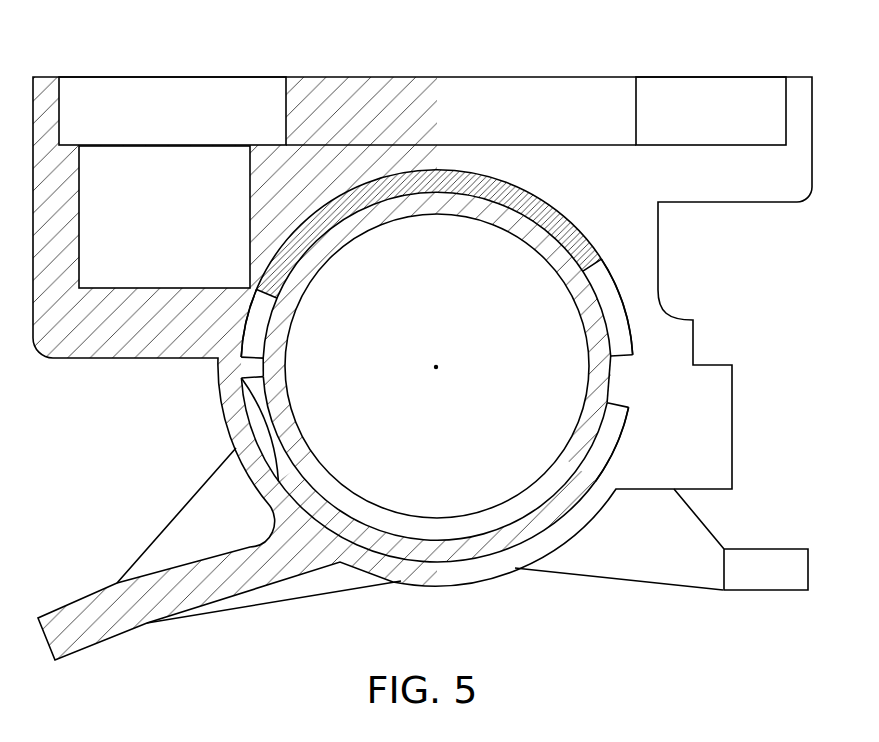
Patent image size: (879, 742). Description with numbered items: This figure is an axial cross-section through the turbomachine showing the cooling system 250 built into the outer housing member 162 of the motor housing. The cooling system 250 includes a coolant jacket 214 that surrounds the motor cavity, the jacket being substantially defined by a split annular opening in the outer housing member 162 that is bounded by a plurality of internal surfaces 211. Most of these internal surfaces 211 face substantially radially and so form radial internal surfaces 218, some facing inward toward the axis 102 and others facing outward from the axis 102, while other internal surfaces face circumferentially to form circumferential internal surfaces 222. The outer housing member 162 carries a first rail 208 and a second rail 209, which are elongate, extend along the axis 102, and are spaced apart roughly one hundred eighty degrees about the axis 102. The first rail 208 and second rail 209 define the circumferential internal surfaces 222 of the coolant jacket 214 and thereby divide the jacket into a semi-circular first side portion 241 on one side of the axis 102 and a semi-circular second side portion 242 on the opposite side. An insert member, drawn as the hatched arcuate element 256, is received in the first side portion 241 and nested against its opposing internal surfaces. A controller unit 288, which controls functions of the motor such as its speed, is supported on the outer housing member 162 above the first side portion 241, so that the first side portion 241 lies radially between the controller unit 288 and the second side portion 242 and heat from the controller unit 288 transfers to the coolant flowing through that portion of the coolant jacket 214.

The axis 102 is at (436, 366).
The outer housing member 162 is at (323, 159).
The first rail 208 is at (618, 390).
The second rail 209 is at (252, 368).
The internal surfaces 211 is at (273, 480).
The coolant jacket 214 is at (478, 548).
The radial internal surfaces 218 is at (488, 182).
The circumferential internal surfaces 222 is at (260, 356).
The first side portion 241 is at (249, 311).
The second side portion 242 is at (265, 461).
The cooling system 250 is at (624, 312).
The bearing ring 256 is at (445, 176).
The controller unit 288 is at (583, 85).